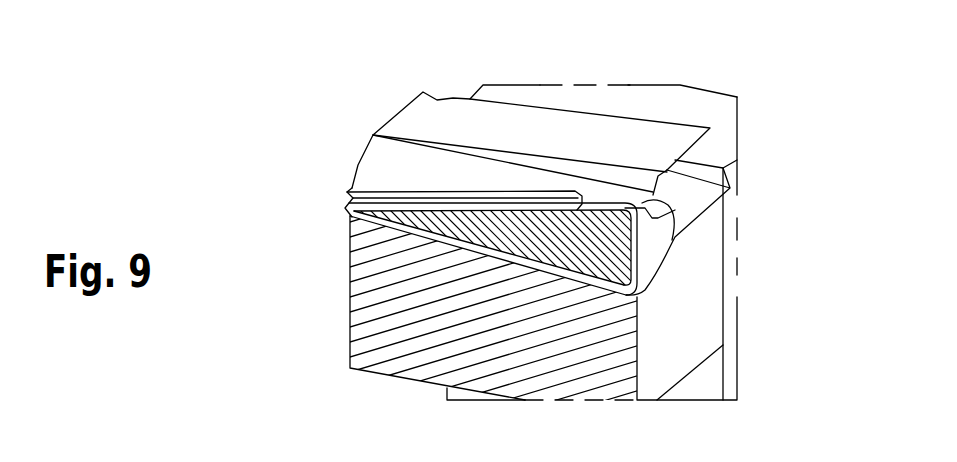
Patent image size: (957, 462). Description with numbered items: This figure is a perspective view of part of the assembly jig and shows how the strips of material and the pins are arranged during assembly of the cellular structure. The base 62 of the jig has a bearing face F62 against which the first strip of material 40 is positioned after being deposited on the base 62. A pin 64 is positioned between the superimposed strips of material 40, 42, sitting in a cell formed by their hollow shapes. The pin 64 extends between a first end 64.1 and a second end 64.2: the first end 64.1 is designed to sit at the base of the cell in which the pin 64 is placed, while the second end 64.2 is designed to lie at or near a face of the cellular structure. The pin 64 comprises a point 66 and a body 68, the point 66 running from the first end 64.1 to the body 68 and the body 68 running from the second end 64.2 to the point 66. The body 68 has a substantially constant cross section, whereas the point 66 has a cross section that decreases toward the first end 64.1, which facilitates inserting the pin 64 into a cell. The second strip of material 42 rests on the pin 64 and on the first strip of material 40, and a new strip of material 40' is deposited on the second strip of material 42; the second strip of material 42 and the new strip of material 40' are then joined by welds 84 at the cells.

The new strip of material 40' is at (544, 171).
The welds 84 is at (416, 196).
The first end of pin 64.1 is at (344, 208).
The second end of pin 64.2 is at (637, 265).
The pin 64 is at (557, 262).
The point of pin 66 is at (405, 226).
The bearing face of base F62 is at (445, 248).
The base 62 is at (432, 340).
The body of pin 68 is at (700, 210).
The second strip of material 42 is at (645, 227).
The first strip of material 40 is at (697, 248).